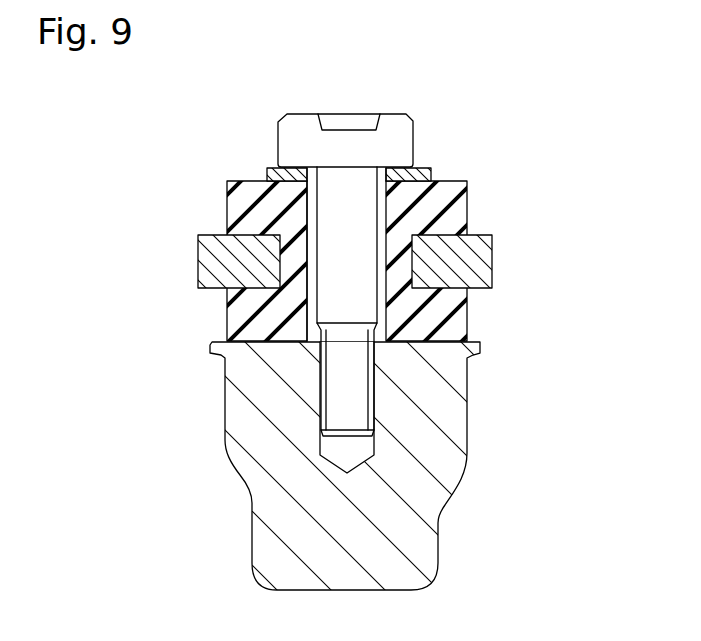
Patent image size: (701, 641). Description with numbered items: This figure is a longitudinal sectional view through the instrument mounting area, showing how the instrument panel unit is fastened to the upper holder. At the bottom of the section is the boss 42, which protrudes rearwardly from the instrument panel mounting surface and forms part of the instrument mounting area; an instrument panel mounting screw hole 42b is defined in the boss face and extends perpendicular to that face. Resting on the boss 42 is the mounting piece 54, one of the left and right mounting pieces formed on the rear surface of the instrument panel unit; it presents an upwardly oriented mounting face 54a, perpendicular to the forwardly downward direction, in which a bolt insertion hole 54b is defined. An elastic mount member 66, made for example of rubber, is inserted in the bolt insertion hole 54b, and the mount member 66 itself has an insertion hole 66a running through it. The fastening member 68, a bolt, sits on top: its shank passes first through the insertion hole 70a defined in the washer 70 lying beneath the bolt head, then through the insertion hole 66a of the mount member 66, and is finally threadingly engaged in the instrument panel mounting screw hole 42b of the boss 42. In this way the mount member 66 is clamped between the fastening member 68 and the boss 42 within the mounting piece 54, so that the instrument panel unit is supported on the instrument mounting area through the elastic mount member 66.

The fastening member 68 is at (398, 124).
The washer 70 is at (432, 168).
The insertion hole 70a is at (313, 168).
The mount member 66 is at (237, 212).
The insertion hole 66a is at (306, 250).
The mounting face 54a is at (267, 233).
The bolt insertion hole 54b is at (402, 248).
The mounting piece 54 is at (477, 262).
The boss 42 is at (447, 413).
The instrument panel mounting screw hole 42b is at (327, 388).